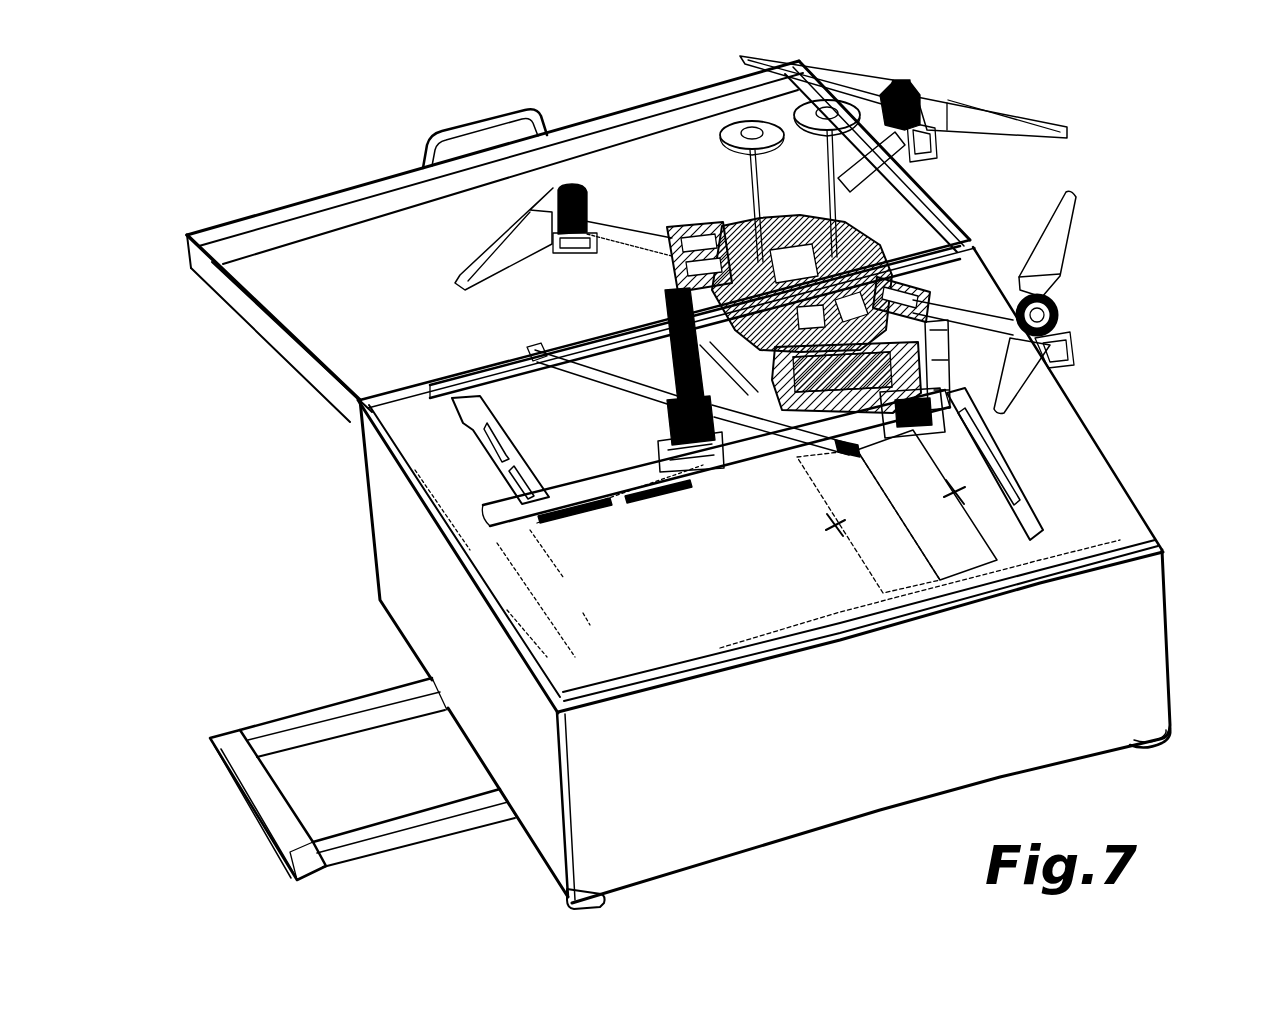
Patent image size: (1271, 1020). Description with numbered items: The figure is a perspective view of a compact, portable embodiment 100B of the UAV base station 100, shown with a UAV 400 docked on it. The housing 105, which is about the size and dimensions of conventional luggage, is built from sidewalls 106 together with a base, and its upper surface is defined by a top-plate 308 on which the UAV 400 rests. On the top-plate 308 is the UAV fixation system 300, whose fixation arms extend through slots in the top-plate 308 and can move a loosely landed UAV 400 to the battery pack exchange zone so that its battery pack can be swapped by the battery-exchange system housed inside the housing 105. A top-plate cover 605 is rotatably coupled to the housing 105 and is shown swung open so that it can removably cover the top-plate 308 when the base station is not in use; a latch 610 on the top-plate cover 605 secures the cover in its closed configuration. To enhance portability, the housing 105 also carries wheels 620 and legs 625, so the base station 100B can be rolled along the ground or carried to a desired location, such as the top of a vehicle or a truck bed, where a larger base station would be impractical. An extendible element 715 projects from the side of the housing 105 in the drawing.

The UAV base station 100 is at (1098, 146).
The compact portable UAV base station embodiment 100B is at (1130, 180).
The housing 105 is at (372, 560).
The sidewalls 106 is at (1165, 600).
The UAV fixation system 300 is at (500, 350).
The top-plate 308 is at (1102, 443).
The UAV 400 is at (957, 53).
The top-plate cover 605 is at (203, 290).
The latch 610 is at (432, 140).
The wheels 620 is at (1172, 745).
The legs 625 is at (565, 897).
The drawer 715 is at (232, 800).